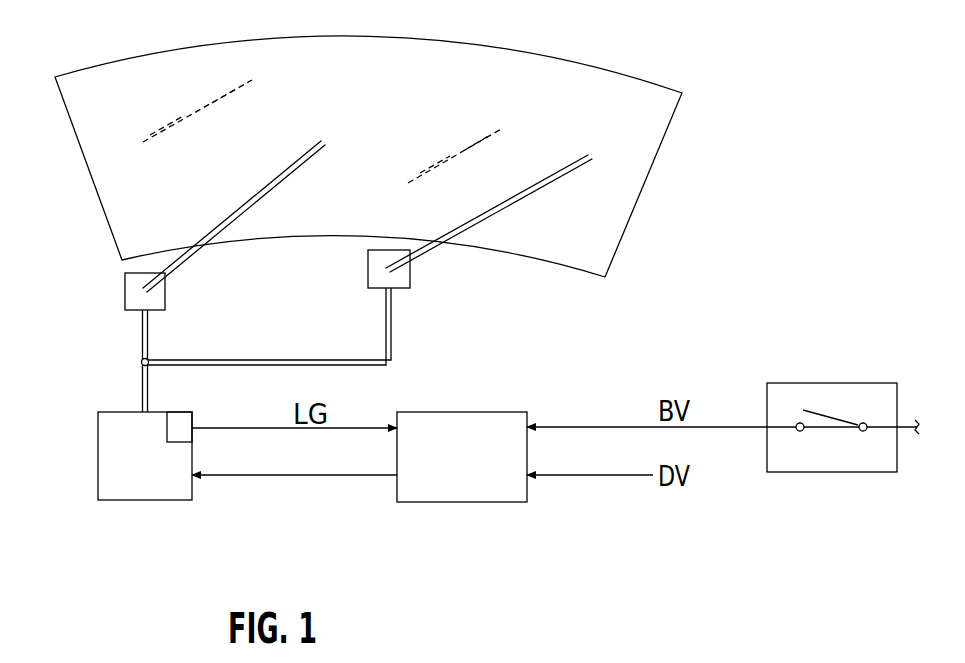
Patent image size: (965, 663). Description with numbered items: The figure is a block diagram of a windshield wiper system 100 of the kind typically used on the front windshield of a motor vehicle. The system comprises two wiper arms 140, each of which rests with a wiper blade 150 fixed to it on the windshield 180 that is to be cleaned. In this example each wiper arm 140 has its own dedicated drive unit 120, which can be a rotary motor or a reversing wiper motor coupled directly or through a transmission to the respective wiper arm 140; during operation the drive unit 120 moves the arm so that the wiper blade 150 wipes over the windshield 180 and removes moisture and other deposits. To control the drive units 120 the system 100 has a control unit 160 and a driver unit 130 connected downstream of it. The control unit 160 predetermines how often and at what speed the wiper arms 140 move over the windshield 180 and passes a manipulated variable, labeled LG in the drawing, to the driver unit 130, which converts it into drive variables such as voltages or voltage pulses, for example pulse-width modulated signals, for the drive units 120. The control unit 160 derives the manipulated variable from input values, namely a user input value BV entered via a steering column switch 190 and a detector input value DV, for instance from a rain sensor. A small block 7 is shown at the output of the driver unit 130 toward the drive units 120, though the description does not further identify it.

The windshield wiper system 100 is at (800, 306).
The drive unit 120 is at (123, 297).
The driver unit 130 is at (173, 473).
The interface / module 7 is at (180, 425).
The wiper arm 140 is at (183, 265).
The wiper blade 150 is at (267, 193).
The control unit 160 is at (460, 503).
The windshield 180 is at (640, 137).
The steering column switch 190 is at (830, 473).